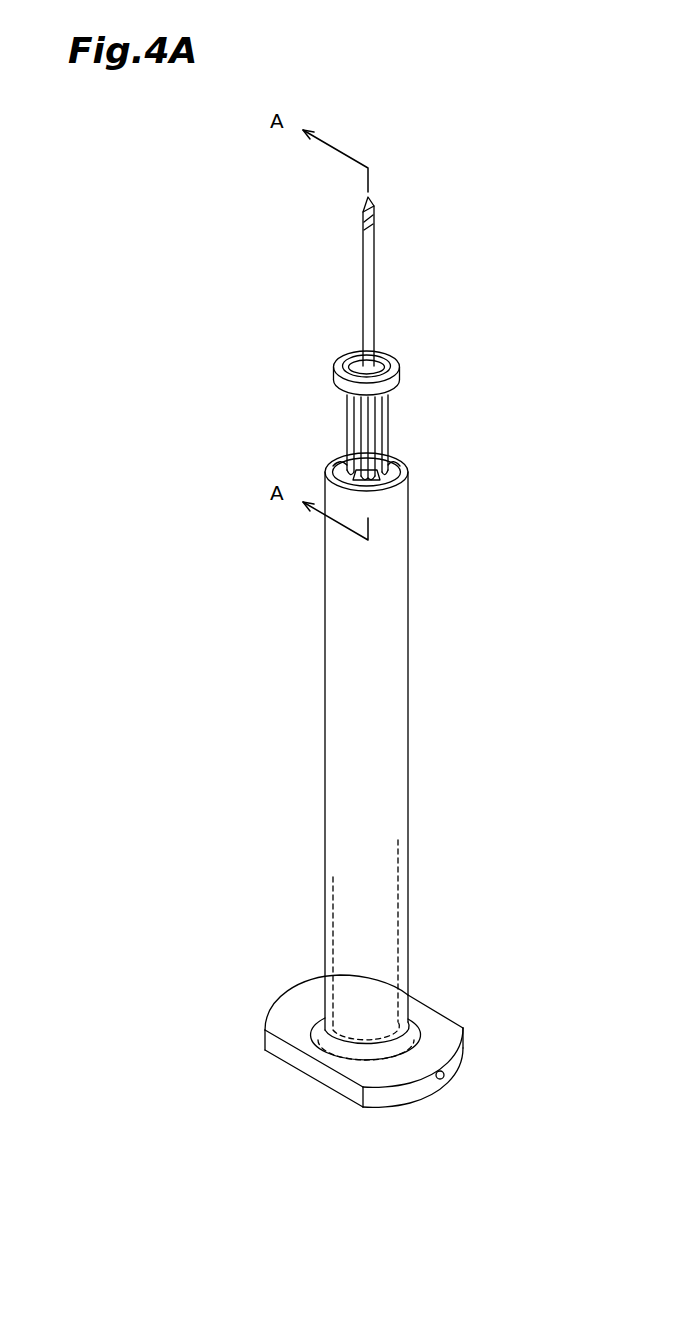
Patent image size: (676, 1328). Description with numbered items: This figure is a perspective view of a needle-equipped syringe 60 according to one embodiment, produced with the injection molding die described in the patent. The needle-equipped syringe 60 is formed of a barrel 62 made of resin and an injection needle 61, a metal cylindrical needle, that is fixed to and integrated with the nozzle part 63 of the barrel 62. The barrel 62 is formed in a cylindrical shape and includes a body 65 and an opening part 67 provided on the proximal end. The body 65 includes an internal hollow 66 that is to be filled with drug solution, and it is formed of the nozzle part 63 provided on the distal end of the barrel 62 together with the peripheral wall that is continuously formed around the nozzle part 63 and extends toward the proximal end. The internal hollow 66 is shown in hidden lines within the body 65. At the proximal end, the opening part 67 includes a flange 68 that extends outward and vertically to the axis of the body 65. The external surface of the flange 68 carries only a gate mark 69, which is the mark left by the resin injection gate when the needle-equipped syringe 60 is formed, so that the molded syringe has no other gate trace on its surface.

The needle-equipped syringe 60 is at (280, 352).
The injection needle 61 is at (380, 322).
The barrel 62 is at (390, 423).
The nozzle part 63 is at (410, 463).
The body 65 is at (385, 670).
The internal hollow 66 is at (365, 973).
The opening part 67 is at (370, 1060).
The flange 68 is at (315, 1068).
The gate mark 69 is at (442, 1080).